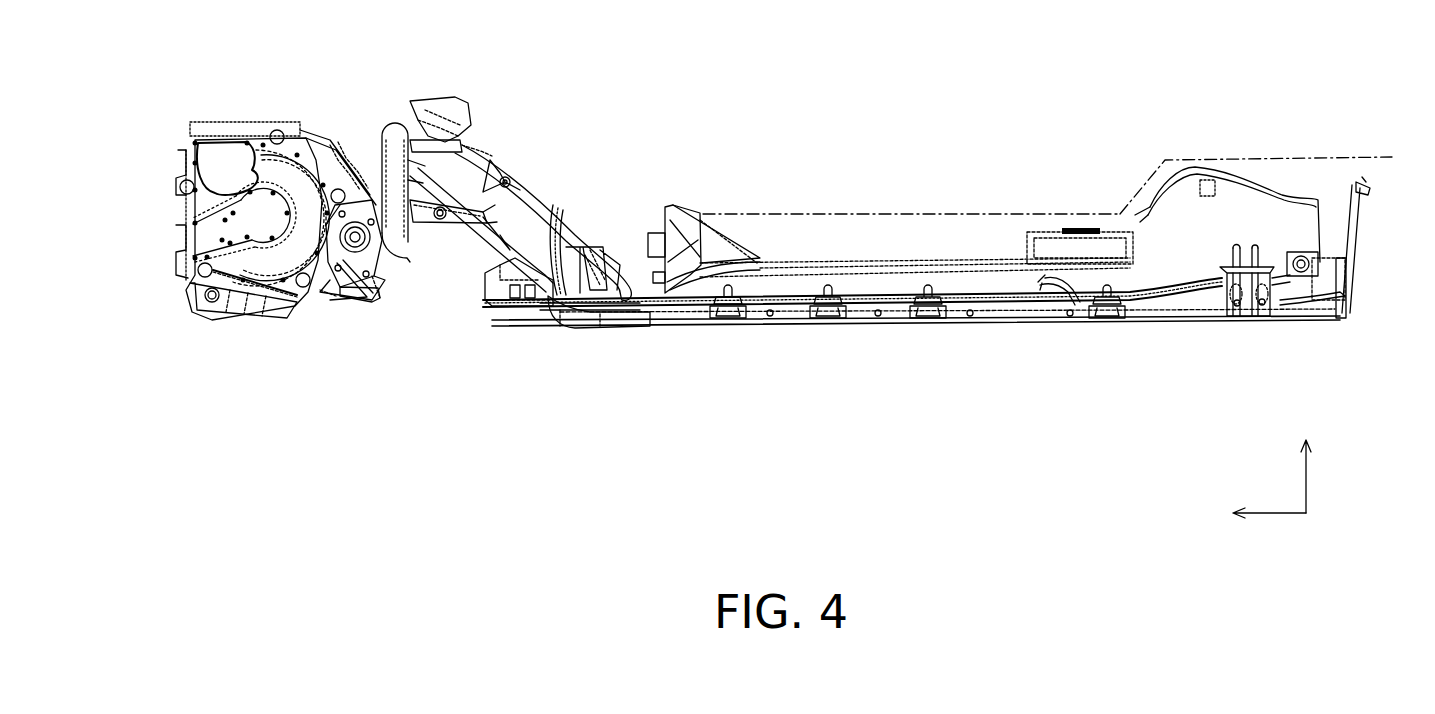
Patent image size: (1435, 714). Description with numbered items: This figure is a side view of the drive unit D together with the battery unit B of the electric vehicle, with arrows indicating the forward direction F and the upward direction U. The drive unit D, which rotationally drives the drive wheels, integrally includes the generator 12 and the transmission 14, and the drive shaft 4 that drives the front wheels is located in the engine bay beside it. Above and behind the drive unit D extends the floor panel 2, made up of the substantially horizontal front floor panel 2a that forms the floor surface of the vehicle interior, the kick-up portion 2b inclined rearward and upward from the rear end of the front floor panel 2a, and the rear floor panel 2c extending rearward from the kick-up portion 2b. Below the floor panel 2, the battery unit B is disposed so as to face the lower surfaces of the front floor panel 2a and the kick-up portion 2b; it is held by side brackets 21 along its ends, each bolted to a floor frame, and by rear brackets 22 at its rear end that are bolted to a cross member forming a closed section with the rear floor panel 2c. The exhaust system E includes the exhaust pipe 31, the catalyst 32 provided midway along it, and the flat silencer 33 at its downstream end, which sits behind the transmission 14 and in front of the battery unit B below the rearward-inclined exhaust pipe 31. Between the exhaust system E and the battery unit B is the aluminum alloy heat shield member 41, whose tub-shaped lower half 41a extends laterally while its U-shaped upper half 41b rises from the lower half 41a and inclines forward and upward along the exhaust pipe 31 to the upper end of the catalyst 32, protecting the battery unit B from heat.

The floor panel 2 is at (1258, 155).
The front floor panel 2a is at (900, 214).
The kick-up portion 2b is at (1162, 157).
The rear floor panel 2c is at (1355, 157).
The drive shaft 4 is at (328, 300).
The generator 12 is at (262, 128).
The transmission 14 is at (334, 140).
The side brackets 21 is at (728, 325).
The rear brackets 22 is at (1350, 213).
The exhaust pipe 31 is at (374, 292).
The catalyst 32 is at (400, 118).
The silencer 33 is at (488, 318).
The heat shield member 41 is at (562, 200).
The lower half 41a is at (582, 328).
The upper half 41b is at (510, 190).
The battery unit B is at (1030, 322).
The drive unit D is at (170, 105).
The exhaust system E is at (433, 258).
The front direction F is at (1272, 513).
The upward direction U is at (1308, 480).